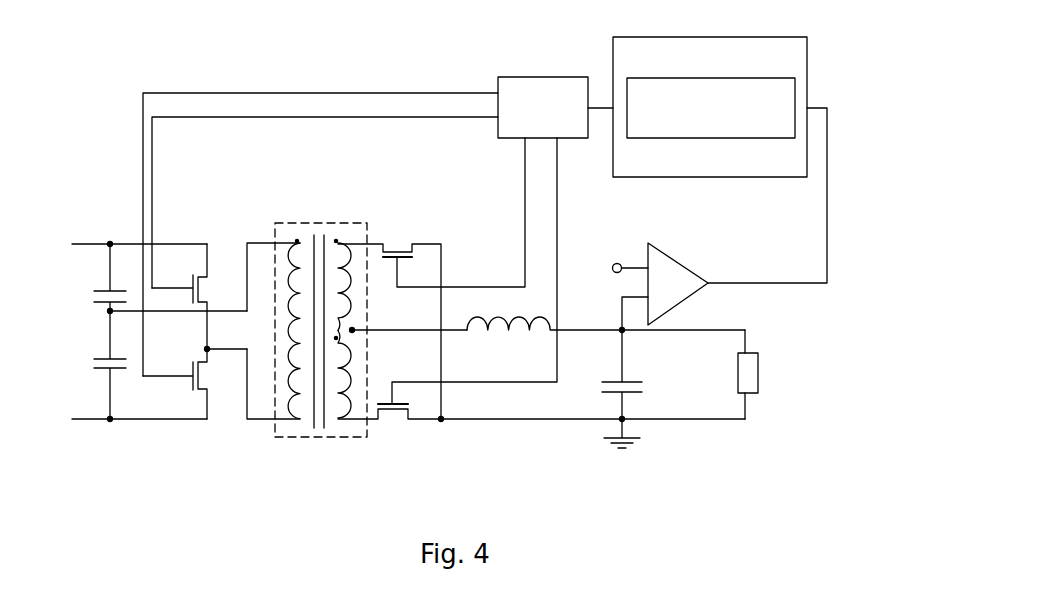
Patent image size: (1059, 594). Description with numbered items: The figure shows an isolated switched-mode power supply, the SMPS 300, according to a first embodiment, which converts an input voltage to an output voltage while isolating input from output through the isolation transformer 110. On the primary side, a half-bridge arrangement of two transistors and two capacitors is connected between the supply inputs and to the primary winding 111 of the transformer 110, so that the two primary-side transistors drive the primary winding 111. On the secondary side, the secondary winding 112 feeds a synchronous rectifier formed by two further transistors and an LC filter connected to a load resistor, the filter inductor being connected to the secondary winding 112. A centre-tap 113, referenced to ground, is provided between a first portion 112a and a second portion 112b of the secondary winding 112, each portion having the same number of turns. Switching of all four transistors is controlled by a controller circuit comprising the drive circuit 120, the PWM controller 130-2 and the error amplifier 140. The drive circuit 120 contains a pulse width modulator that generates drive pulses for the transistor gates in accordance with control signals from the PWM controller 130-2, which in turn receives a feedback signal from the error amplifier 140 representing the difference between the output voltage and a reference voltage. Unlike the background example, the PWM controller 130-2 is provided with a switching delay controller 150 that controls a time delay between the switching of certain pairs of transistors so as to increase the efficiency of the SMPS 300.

The isolation transformer 110 is at (328, 223).
The primary winding 111 is at (291, 428).
The secondary winding 112 is at (344, 428).
The first portion of the secondary winding 112a is at (348, 288).
The second portion of the secondary winding 112b is at (344, 370).
The centre-tap 113 is at (356, 334).
The drive circuit 120 is at (520, 138).
The PWM controller 130-2 is at (745, 178).
The error amplifier 140 is at (692, 266).
The switching delay controller 150 is at (721, 139).
The SMPS 300 is at (172, 470).